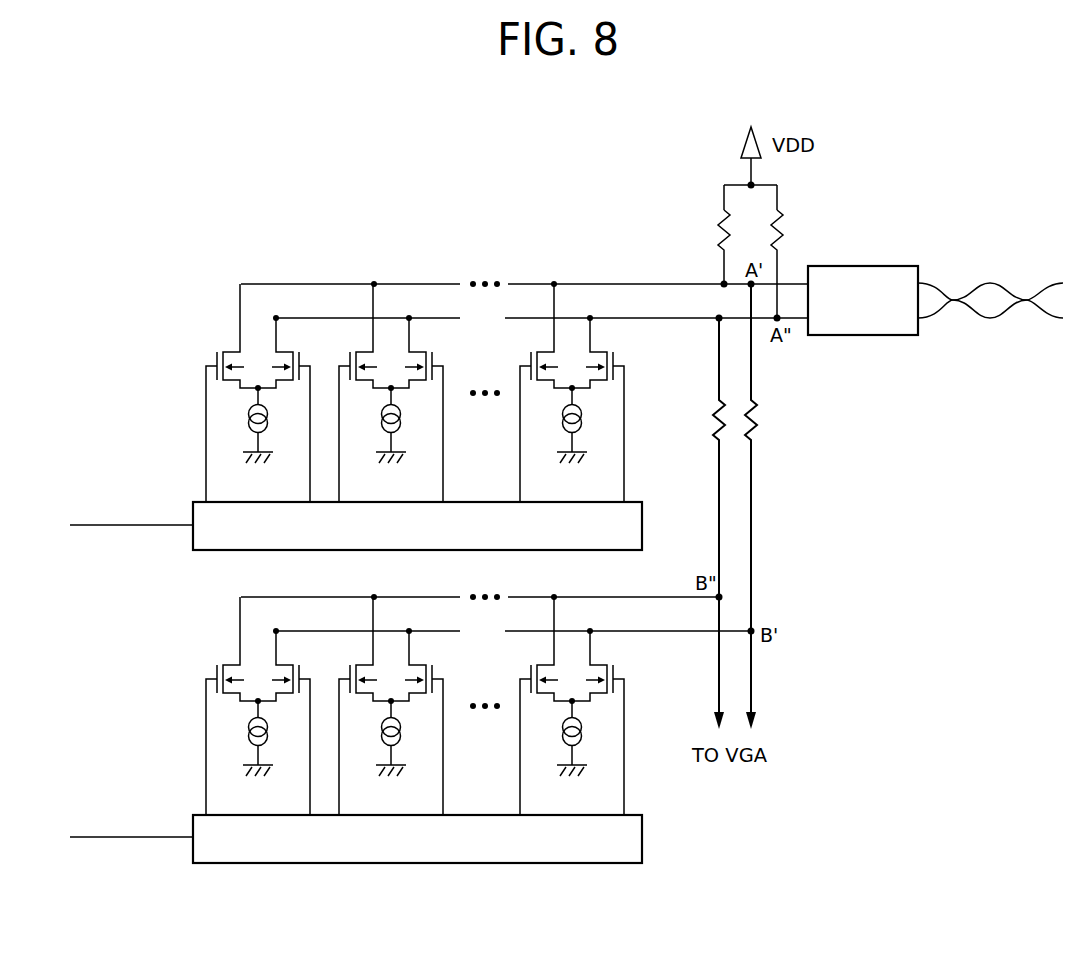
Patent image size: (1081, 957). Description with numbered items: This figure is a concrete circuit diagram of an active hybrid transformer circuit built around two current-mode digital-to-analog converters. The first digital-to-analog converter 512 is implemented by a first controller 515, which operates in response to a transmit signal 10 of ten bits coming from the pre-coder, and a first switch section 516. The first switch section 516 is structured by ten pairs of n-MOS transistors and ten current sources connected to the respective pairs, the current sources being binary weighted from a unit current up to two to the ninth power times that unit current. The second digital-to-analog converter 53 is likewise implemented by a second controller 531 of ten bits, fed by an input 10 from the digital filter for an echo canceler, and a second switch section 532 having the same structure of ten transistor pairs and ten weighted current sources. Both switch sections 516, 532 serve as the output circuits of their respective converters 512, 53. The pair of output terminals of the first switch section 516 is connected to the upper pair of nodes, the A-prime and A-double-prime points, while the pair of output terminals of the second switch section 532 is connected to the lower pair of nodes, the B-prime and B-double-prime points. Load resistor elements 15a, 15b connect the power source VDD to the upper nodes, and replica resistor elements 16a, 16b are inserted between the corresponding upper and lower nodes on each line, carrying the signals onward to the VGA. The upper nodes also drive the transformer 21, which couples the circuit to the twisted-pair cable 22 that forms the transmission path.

The transmit signal of ten bits 10 is at (137, 535).
The load resistor element 15a is at (716, 231).
The load resistor element 15b is at (795, 229).
The replica resistor element 16a is at (760, 420).
The replica resistor element 16b is at (712, 422).
The transformer 21 is at (886, 266).
The cable 22 is at (1005, 283).
The digital-to-analog converter 512 is at (442, 393).
The first switch section 516 is at (616, 354).
The first controller 515 is at (618, 553).
The digital-to-analog converter 53 is at (443, 706).
The second switch section 532 is at (618, 669).
The second controller 531 is at (643, 836).